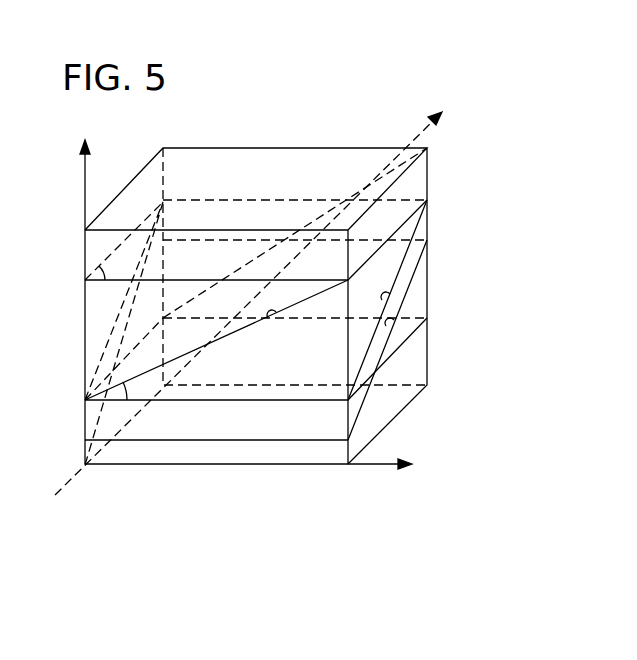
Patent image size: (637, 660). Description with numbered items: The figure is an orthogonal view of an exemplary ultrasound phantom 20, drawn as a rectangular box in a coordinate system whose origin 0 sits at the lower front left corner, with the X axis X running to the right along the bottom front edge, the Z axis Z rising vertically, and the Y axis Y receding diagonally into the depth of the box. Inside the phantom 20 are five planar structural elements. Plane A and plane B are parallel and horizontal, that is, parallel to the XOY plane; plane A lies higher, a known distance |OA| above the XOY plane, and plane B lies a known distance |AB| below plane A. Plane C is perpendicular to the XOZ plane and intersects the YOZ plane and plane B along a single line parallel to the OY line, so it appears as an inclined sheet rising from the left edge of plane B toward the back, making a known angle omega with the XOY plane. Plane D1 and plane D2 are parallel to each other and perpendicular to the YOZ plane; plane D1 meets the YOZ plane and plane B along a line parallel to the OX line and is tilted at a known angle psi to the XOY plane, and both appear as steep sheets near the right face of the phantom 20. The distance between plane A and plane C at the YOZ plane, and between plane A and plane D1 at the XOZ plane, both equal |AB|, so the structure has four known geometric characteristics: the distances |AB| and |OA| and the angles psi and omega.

The ultrasound phantom 20 is at (258, 148).
The plane A is at (97, 268).
The plane B is at (85, 402).
The plane C is at (272, 316).
The plane D1 is at (390, 294).
The plane D2 is at (395, 318).
The X axis X is at (380, 478).
The Y axis Y is at (248, 303).
The Z axis Z is at (78, 302).
The origin O 0 is at (85, 491).